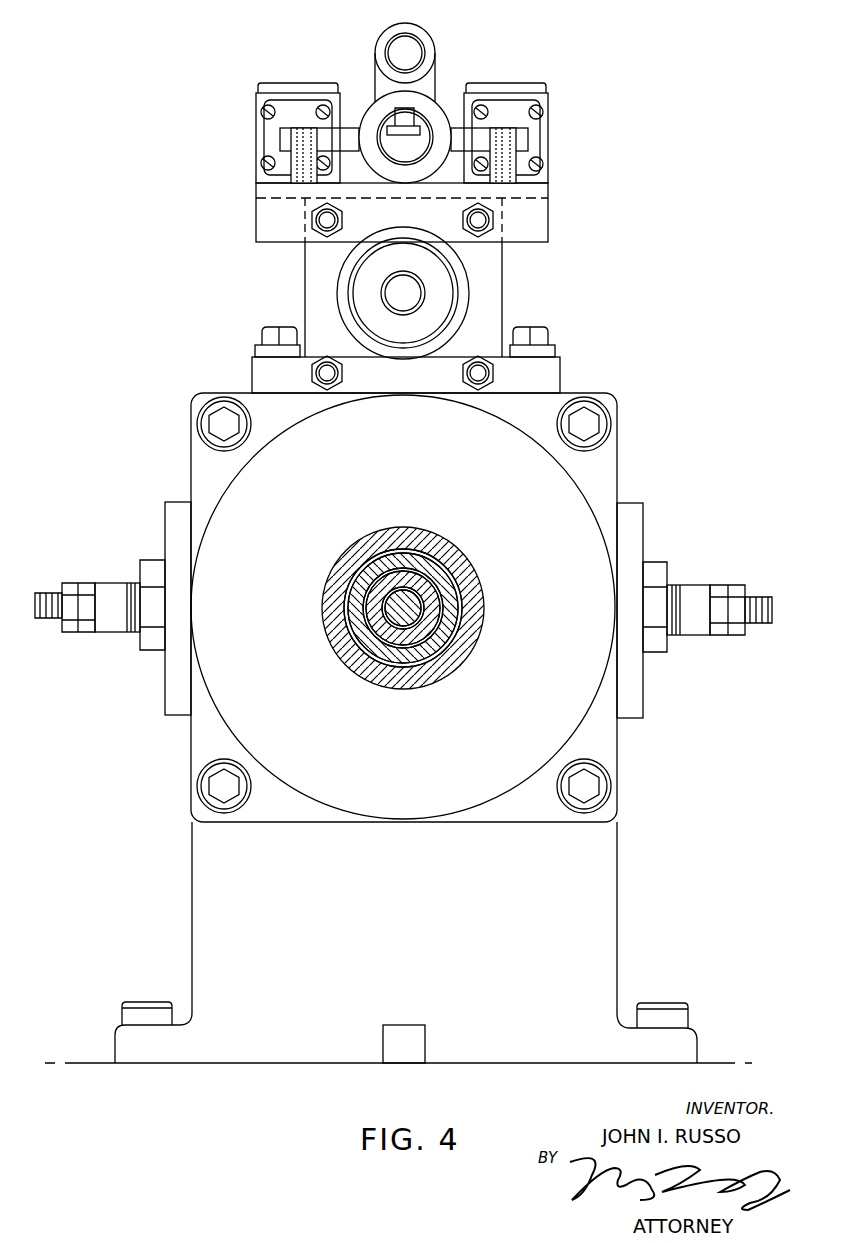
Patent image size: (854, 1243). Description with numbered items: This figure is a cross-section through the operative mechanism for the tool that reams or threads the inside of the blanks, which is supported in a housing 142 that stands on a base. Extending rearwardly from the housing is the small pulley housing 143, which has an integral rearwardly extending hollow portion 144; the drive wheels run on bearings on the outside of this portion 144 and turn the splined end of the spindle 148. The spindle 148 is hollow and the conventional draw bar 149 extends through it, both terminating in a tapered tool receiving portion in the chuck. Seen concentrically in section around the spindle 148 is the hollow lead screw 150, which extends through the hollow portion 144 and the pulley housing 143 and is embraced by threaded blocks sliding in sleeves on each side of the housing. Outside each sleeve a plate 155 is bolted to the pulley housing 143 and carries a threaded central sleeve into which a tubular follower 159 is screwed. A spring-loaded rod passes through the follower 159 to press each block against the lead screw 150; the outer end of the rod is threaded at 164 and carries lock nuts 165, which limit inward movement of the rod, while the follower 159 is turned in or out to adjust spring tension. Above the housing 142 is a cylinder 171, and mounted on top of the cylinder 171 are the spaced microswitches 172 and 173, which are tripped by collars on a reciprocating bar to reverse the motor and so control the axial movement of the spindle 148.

The housing 142 is at (208, 910).
The pulley housing 143 is at (344, 747).
The hollow portion 144 is at (424, 680).
The spindle 148 is at (432, 583).
The draw bar 149 is at (400, 600).
The lead screw 150 is at (442, 642).
The plate 155 is at (640, 524).
The tubular follower 159 is at (676, 582).
The threaded outer end of rod 164 is at (749, 626).
The lock nuts 165 is at (727, 637).
The cylinder 171 is at (466, 302).
The microswitch 172 is at (548, 124).
The microswitch 173 is at (258, 140).